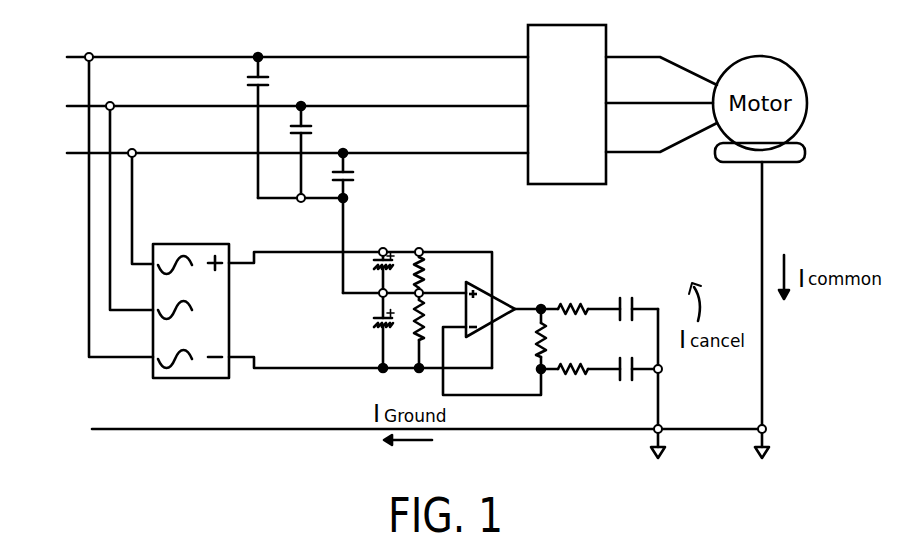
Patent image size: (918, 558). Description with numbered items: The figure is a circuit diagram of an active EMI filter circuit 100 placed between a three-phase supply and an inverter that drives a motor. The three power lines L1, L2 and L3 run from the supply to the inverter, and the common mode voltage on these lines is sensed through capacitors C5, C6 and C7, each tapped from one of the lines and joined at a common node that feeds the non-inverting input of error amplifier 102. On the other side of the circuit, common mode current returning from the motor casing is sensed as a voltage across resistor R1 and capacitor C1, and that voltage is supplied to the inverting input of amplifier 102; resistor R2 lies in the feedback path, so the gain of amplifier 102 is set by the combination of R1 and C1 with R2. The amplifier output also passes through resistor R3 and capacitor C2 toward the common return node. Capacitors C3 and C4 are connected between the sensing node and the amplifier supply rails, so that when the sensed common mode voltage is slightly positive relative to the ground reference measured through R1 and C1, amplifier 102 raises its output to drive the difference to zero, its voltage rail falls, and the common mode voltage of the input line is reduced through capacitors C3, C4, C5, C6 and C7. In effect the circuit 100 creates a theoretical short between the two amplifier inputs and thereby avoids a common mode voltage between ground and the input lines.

The active EMI filter circuit 100 is at (544, 212).
The error amplifier 102 is at (496, 294).
The capacitor C1 is at (623, 359).
The capacitor C2 is at (623, 299).
The capacitor C3 is at (369, 272).
The capacitor C4 is at (369, 330).
The capacitor C5 is at (274, 127).
The capacitor C6 is at (317, 152).
The capacitor C7 is at (359, 223).
The resistor R1 is at (573, 362).
The resistor R2 is at (527, 340).
The resistor R3 is at (573, 301).
The power line L1 is at (280, 57).
The power line L2 is at (280, 106).
The power line L3 is at (280, 153).